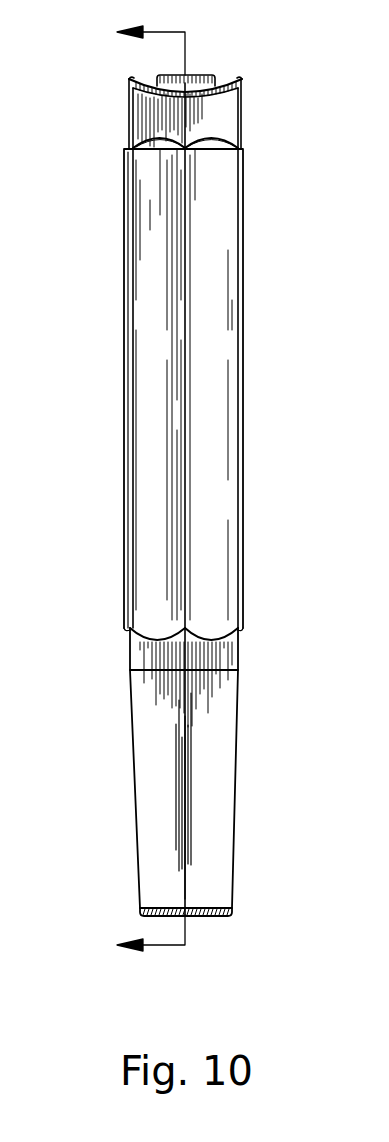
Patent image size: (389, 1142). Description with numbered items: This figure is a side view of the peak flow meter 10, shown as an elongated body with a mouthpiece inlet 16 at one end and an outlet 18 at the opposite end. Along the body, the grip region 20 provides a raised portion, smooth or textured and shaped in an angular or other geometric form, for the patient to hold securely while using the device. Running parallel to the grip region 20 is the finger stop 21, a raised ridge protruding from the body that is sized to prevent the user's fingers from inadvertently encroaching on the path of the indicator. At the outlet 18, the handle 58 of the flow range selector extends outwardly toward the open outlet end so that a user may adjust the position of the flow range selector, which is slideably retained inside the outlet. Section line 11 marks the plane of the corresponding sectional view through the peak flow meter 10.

The peak flow meter 10 is at (204, 495).
The section line 11- 11 is at (131, 489).
The inlet 16 is at (213, 917).
The outlet 18 is at (145, 80).
The grip region 20 is at (215, 253).
The finger stop 21 is at (126, 196).
The handle 58 is at (200, 77).